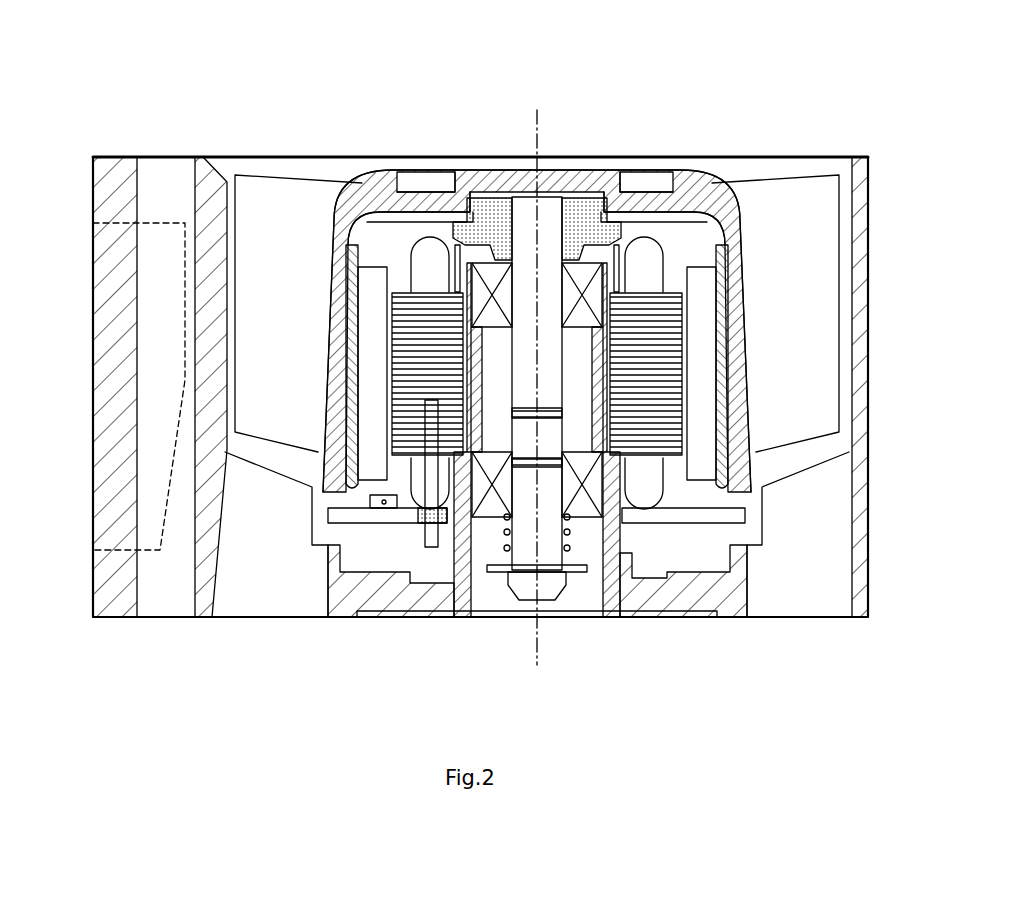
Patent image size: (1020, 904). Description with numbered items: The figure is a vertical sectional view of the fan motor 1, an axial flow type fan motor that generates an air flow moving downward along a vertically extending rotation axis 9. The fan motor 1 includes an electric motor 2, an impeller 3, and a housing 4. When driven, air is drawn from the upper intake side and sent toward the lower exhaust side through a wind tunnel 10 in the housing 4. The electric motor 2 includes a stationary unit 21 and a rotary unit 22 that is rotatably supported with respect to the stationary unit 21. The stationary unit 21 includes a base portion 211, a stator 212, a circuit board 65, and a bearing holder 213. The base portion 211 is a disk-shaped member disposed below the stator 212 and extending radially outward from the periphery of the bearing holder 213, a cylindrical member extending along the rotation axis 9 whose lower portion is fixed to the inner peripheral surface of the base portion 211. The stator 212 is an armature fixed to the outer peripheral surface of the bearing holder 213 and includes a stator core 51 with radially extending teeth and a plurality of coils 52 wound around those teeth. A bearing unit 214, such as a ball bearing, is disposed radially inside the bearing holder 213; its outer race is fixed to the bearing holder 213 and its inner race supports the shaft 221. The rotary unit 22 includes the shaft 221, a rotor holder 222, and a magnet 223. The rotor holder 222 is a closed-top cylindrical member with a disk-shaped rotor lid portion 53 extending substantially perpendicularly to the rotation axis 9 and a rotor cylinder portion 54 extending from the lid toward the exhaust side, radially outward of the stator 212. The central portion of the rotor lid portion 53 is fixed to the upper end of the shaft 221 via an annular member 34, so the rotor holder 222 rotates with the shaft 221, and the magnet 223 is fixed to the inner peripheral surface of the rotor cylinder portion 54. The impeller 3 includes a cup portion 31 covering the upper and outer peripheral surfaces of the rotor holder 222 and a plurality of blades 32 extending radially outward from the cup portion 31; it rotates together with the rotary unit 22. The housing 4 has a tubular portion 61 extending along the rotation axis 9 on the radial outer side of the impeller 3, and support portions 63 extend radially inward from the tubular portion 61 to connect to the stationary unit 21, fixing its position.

The fan motor 1 is at (752, 56).
The electric motor 2 is at (679, 537).
The impeller 3 is at (340, 92).
The housing 4 is at (118, 126).
The rotation axis 9 is at (538, 118).
The wind tunnel 10 is at (232, 168).
The stationary unit 21 is at (510, 686).
The rotary unit 22 is at (572, 92).
The cup portion 31 is at (338, 215).
The blades 32 is at (262, 215).
The annular member 34 is at (482, 212).
The stator core 51 is at (420, 262).
The coils 52 is at (372, 268).
The rotor lid portion 53 is at (398, 287).
The rotor cylinder portion 54 is at (340, 213).
The tubular portion 61 is at (108, 190).
The support portions 63 is at (267, 547).
The circuit board 65 is at (400, 472).
The base portion 211 is at (413, 590).
The stator 212 is at (392, 580).
The bearing holder 213 is at (465, 590).
The bearing unit 214 is at (590, 512).
The shaft 221 is at (553, 227).
The rotor holder 222 is at (632, 203).
The magnet 223 is at (697, 277).